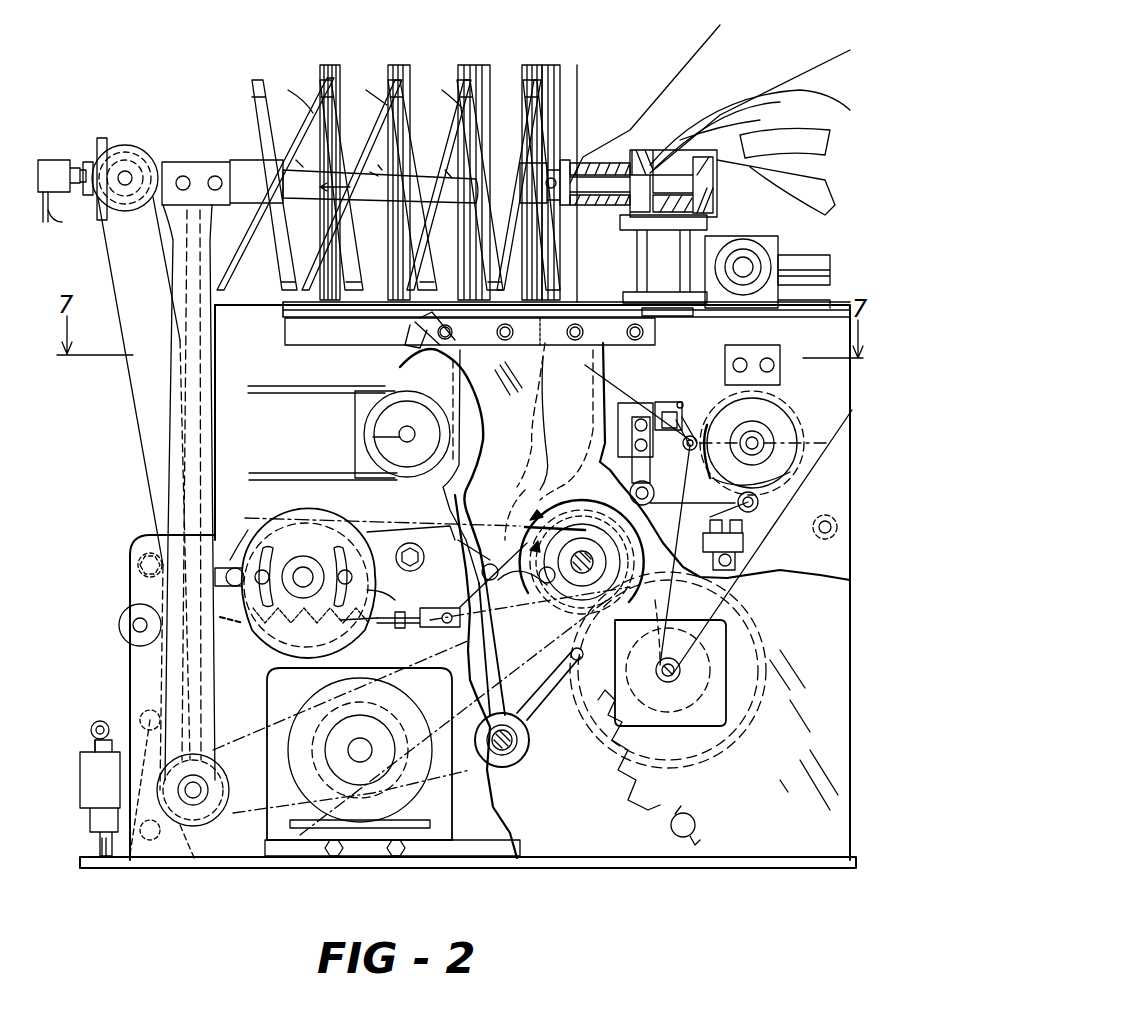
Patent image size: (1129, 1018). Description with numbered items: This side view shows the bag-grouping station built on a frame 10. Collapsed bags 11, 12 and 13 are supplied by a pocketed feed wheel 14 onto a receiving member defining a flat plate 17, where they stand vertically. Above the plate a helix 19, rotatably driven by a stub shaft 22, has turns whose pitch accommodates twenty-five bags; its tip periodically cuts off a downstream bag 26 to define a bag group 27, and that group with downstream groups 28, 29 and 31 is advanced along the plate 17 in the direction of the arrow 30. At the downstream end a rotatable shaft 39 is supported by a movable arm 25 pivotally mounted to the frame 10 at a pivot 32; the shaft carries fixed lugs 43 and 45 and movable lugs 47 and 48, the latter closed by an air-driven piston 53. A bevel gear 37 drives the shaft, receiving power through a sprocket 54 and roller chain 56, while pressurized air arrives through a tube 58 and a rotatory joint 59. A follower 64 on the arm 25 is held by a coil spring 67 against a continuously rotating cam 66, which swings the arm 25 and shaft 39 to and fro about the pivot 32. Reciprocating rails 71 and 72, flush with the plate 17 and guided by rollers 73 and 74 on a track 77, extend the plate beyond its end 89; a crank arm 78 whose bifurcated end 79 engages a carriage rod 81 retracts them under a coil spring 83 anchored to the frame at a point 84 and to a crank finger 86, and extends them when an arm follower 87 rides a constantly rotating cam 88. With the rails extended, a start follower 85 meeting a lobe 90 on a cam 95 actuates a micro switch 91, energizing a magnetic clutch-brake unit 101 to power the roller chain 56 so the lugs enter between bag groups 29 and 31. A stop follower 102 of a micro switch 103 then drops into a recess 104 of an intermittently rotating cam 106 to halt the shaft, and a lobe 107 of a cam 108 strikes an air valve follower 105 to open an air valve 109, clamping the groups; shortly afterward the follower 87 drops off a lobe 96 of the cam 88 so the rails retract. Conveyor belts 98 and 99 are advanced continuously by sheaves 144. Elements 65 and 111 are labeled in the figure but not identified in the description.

The frame 10 is at (135, 685).
The collapsed bag 11 is at (810, 70).
The collapsed bag 12 is at (710, 45).
The collapsed bag 13 is at (578, 85).
The pocketed feed wheel 14 is at (768, 162).
The flat plate 17 is at (452, 302).
The helix 19 is at (311, 70).
The stub shaft 22 is at (592, 162).
The movable arm 25 is at (205, 362).
The downstream bag 26 is at (560, 72).
The bag group 27 is at (540, 66).
The bag group 28 is at (478, 55).
The bag group 29 is at (408, 55).
The arrow 30 is at (380, 186).
The bag group 31 is at (335, 66).
The pivot 32 is at (197, 800).
The bevel gear 37 is at (125, 174).
The rotatable shaft 39 is at (228, 160).
The fixed lug 43 is at (303, 167).
The fixed lug 45 is at (380, 170).
The movable lug 47 is at (377, 172).
The movable lug 48 is at (452, 172).
The piston 53 is at (128, 185).
The sprocket 54 is at (97, 160).
The roller chain 56 is at (112, 325).
The tube 58 is at (65, 228).
The rotatory joint 59 is at (52, 160).
The follower 64 is at (242, 546).
The rod 65 is at (400, 580).
The cam 66 is at (302, 515).
The coil spring 67 is at (395, 630).
The reciprocating rail 71 is at (463, 338).
The reciprocating rail 72 is at (310, 318).
The roller 73 is at (452, 340).
The roller 74 is at (510, 340).
The track 77 is at (544, 441).
The crank arm 78 is at (567, 439).
The bifurcated end 79 is at (402, 419).
The carriage rod 81 is at (418, 340).
The coil spring 83 is at (645, 790).
The frame connection 84 is at (696, 826).
The start follower 85 is at (680, 455).
The crank finger 86 is at (560, 672).
The arm follower 87 is at (506, 573).
The cam 88 is at (570, 515).
The plate end 89 is at (410, 330).
The lobe 90 is at (810, 410).
The micro switch 91 is at (670, 402).
The cam 95 is at (771, 442).
The lobe 96 is at (520, 527).
The conveyor belt 98 is at (322, 433).
The conveyor belt 99 is at (272, 471).
The magnetic clutch-brake unit 101 is at (268, 718).
The stop follower 102 is at (137, 865).
The micro switch 103 is at (112, 770).
The recess 104 is at (197, 864).
The air valve follower 105 is at (755, 508).
The intermittently rotating cam 106 is at (225, 780).
The lobe 107 is at (715, 500).
The cam 108 is at (760, 500).
The air valve 109 is at (745, 552).
The bracket 111 is at (718, 400).
The sheave 144 is at (373, 437).